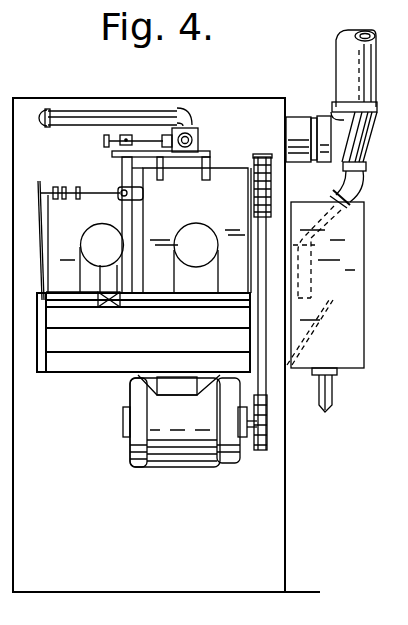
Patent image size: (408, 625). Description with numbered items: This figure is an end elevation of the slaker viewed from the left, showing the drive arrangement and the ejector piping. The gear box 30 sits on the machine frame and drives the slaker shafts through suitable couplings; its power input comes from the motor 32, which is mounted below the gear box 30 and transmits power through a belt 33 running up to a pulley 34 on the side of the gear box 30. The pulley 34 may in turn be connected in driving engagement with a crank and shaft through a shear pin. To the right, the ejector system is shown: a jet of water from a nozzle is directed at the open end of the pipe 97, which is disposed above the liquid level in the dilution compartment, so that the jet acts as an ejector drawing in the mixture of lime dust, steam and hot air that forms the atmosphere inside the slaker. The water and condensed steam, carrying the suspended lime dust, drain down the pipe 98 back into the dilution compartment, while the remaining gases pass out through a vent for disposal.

The gear box 30 is at (227, 178).
The motor 32 is at (172, 463).
The belt 33 is at (261, 388).
The pulley 34 is at (272, 170).
The pipe 97 is at (299, 118).
The pipe 98 is at (362, 187).